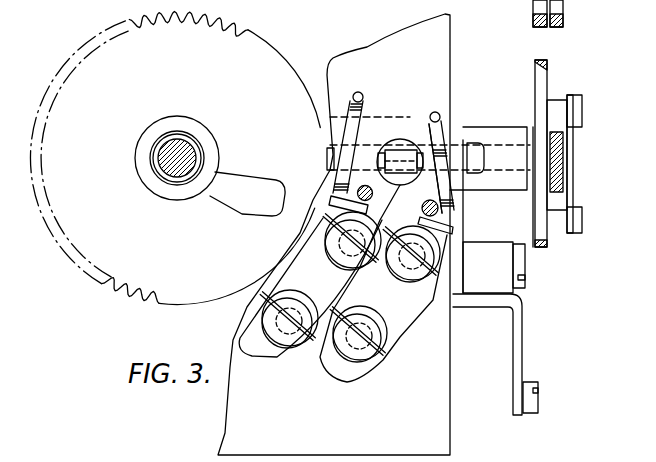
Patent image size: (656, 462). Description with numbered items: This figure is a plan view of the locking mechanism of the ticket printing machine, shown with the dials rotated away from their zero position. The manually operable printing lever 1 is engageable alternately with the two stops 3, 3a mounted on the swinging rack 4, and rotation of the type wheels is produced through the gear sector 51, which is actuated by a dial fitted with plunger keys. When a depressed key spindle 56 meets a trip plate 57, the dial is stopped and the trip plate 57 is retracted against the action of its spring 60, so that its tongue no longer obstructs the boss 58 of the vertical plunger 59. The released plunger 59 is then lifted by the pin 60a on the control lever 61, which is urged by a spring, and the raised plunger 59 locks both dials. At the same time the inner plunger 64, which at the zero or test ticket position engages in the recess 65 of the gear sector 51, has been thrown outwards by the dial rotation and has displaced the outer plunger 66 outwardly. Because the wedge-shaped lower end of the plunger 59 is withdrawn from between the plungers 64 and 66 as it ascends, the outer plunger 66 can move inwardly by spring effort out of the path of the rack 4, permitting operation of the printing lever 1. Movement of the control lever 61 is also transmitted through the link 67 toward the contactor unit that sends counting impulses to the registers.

The printing lever 1 is at (564, 156).
The stop 3 is at (557, 155).
The stop 3a is at (557, 233).
The swinging rack 4 is at (536, 84).
The gear sector 51 is at (175, 158).
The key spindle 56 is at (365, 185).
The trip plate 57 is at (469, 221).
The boss 58 is at (386, 147).
The vertical plunger 59 is at (398, 161).
The spring 60 is at (357, 106).
The pin 60a is at (432, 127).
The control lever 61 is at (522, 327).
The inner plunger 64 is at (328, 156).
The recess 65 is at (312, 188).
The outer plunger 66 is at (508, 166).
The link 67 is at (527, 412).